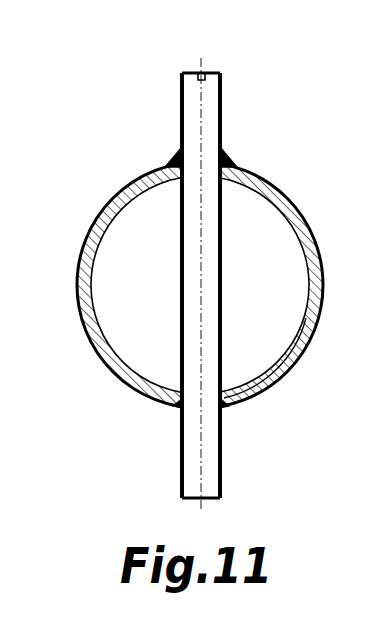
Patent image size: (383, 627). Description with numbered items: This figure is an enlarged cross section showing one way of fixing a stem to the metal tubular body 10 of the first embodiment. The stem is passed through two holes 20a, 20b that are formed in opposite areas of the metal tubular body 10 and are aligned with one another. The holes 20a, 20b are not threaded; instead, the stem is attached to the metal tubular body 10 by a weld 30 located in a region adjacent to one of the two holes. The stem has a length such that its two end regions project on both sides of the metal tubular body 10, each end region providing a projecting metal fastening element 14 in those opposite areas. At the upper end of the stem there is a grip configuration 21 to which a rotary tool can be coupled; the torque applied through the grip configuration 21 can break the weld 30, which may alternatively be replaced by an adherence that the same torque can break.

The metal tubular body 10 is at (112, 204).
The projecting metal fastening element 14 is at (210, 102).
The grip configuration 21 is at (201, 72).
The weld 30 is at (227, 163).
The hole 20a is at (224, 182).
The hole 20b is at (182, 411).